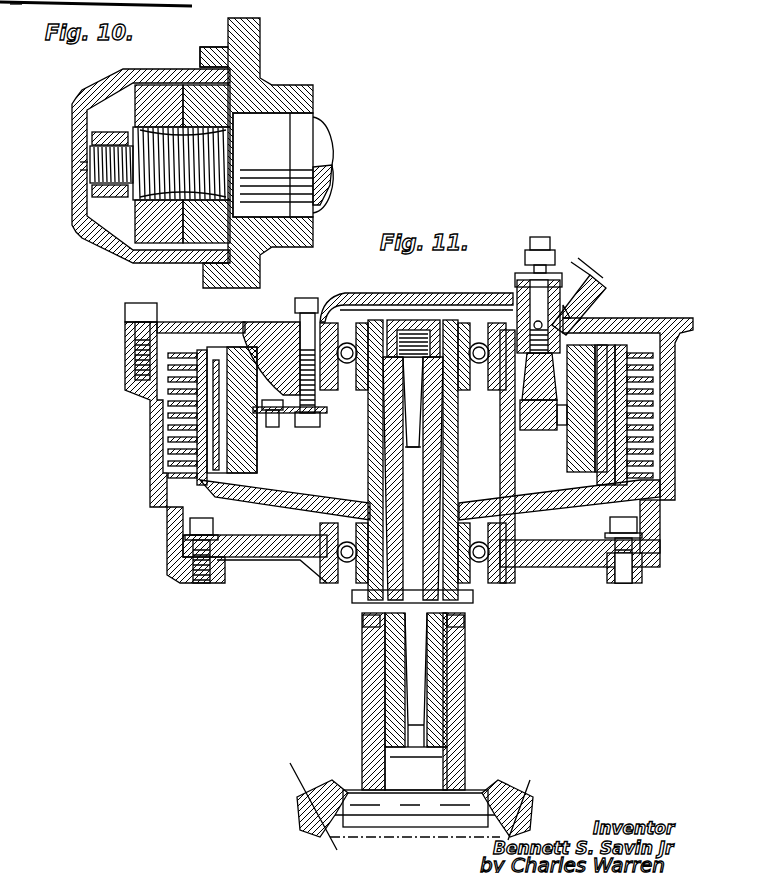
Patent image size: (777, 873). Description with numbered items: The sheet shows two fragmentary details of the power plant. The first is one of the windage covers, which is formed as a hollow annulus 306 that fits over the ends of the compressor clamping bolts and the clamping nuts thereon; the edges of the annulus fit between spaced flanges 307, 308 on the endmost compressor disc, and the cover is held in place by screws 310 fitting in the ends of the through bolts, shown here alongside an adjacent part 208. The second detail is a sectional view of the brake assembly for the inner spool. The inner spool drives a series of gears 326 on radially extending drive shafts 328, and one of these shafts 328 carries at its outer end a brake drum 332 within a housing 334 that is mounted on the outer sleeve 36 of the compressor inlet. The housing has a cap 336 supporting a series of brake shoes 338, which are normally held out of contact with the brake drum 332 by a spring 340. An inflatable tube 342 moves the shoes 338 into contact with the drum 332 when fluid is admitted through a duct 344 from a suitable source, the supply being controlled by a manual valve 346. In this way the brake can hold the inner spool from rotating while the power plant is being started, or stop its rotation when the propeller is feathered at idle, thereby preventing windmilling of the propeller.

In FIG. 10, the conduit 208 is at (15, 2).
In FIG. 10, the hollow annulus 306 is at (113, 84).
In FIG. 10, the flange 307 is at (215, 273).
In FIG. 10, the flange 308 is at (208, 50).
In FIG. 10, the screw 310 is at (75, 152).
In FIG. 11, the gear 326 is at (533, 800).
In FIG. 11, the drive shaft 328 is at (413, 600).
In FIG. 11, the brake drum 332 is at (650, 390).
In FIG. 11, the housing 334 is at (667, 440).
In FIG. 11, the cap 336 is at (247, 327).
In FIG. 11, the brake shoes 338 is at (213, 400).
In FIG. 11, the spring 340 is at (223, 417).
In FIG. 11, the inflatable tube 342 is at (600, 353).
In FIG. 11, the duct 344 is at (532, 380).
In FIG. 11, the manual valve 346 is at (535, 302).
In FIG. 11, the outer sleeve 36 is at (642, 568).